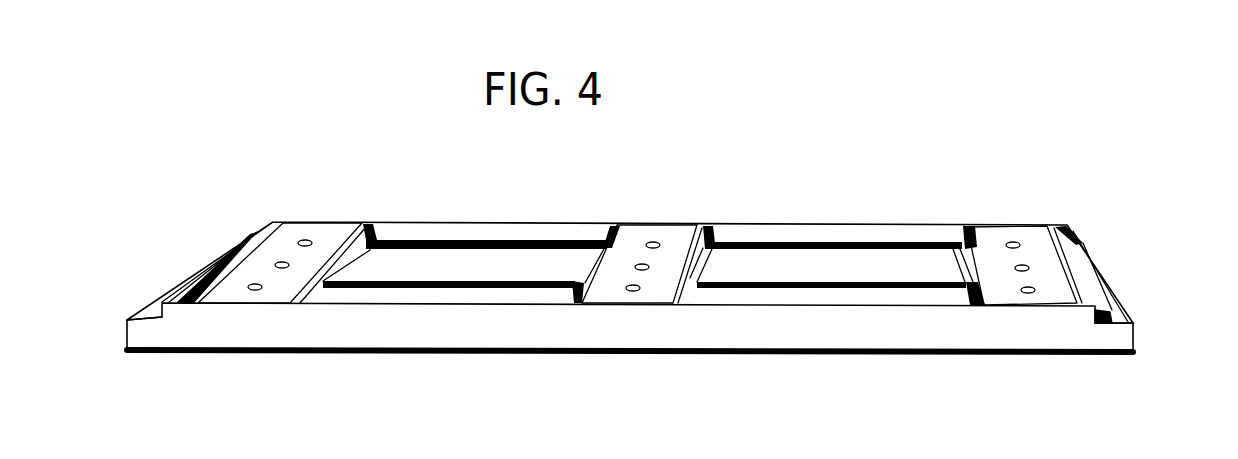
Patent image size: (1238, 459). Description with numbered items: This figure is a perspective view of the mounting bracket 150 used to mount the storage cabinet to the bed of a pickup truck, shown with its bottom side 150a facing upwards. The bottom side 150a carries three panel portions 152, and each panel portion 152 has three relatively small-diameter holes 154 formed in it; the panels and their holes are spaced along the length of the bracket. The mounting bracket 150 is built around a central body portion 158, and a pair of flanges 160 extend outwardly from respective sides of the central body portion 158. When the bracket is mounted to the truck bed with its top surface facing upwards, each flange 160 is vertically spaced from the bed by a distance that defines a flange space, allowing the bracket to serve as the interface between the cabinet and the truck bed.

The mounting bracket 150 is at (250, 215).
The bottom side 150a is at (852, 235).
The panel portion 152 is at (343, 233).
The small-diameter hole 154 is at (660, 242).
The central body portion 158 is at (920, 335).
The flange 160 is at (140, 333).